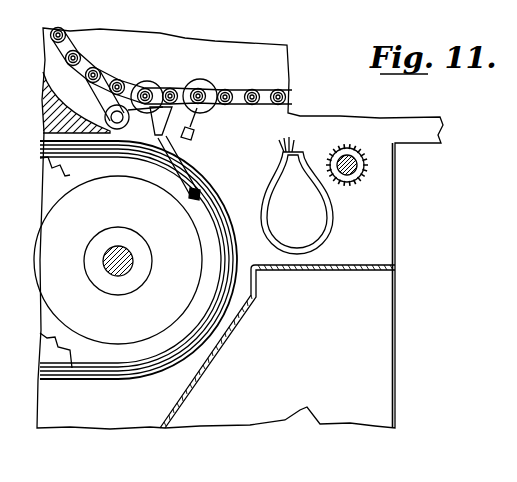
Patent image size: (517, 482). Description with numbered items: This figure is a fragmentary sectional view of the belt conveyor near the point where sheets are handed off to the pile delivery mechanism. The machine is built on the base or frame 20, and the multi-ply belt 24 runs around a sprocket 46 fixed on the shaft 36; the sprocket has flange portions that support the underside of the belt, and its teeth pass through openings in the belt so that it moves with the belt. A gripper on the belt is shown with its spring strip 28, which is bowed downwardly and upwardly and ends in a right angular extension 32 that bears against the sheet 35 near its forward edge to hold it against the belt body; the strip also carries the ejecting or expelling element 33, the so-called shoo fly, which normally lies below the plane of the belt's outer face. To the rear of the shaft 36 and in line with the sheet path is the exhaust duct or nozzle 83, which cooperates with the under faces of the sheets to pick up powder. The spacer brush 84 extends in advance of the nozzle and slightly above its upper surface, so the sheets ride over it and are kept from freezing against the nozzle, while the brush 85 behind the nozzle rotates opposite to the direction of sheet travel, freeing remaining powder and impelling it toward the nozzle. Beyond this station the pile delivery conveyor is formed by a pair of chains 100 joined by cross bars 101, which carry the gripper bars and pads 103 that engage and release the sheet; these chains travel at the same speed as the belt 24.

The base or frame 20 is at (383, 299).
The multi-ply belt 24 is at (118, 371).
The spring strip 28 is at (174, 187).
The right angular extension 32 is at (180, 132).
The ejecting or expelling element 33 is at (170, 136).
The sheet 35 is at (140, 138).
The shaft 36 is at (118, 272).
The sprocket 46 is at (170, 305).
The exhaust duct or nozzle 83 is at (313, 228).
The spacer brush 84 is at (283, 148).
The brush 85 is at (368, 170).
The chains 100 is at (88, 68).
The cross bars 101 is at (165, 82).
The gripper bars and pads 103 is at (188, 131).